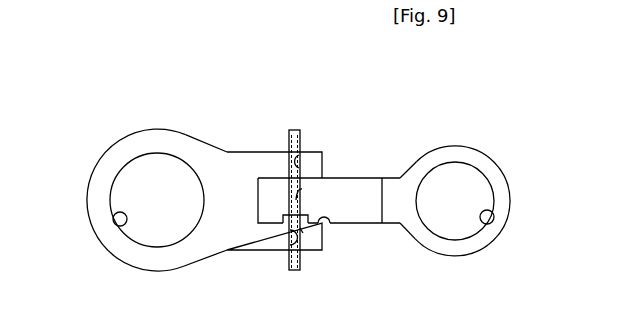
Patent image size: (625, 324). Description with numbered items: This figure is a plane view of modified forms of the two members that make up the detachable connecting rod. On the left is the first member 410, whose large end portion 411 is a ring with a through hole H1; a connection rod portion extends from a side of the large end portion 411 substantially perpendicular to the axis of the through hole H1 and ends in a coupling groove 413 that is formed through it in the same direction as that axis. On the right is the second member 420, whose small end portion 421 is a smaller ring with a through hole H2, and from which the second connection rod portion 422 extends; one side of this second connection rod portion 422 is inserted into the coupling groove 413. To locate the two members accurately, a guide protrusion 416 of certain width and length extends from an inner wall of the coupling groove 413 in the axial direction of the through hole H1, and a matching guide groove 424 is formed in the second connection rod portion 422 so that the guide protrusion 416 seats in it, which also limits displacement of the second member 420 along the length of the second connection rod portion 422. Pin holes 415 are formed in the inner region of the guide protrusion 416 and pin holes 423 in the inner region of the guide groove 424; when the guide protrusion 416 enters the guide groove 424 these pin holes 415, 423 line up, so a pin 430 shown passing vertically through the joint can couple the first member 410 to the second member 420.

The first member 410 is at (127, 129).
The large end portion 411 is at (100, 187).
The through hole H1 is at (123, 225).
The pin 430 is at (298, 126).
The pin holes 415 is at (299, 158).
The guide protrusion 416 is at (283, 214).
The second connection rod portion 422 is at (360, 185).
The pin holes 423 is at (302, 189).
The guide groove 424 is at (305, 233).
The coupling groove 413 is at (327, 225).
The second member 420 is at (477, 145).
The small end portion 421 is at (502, 200).
The through hole H2 is at (483, 223).